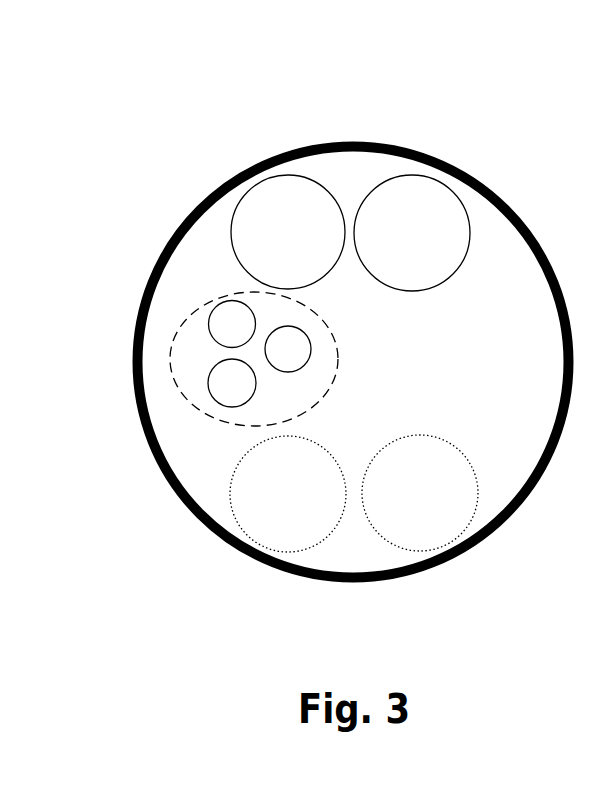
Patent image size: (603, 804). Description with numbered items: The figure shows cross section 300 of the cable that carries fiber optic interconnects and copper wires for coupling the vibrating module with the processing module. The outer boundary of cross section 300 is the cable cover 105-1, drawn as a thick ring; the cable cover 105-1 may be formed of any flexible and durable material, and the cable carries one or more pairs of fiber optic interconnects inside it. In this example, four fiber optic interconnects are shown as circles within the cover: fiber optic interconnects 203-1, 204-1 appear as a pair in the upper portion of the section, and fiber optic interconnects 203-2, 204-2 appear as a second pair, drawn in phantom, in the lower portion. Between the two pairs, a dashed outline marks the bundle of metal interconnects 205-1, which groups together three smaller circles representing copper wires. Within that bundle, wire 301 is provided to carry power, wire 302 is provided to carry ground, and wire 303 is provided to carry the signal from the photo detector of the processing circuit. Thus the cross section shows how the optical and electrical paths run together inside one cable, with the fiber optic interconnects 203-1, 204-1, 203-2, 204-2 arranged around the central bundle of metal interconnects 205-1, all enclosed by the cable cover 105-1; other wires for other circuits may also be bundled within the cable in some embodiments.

The cross section 300 is at (98, 60).
The cable cover 105-1 is at (317, 141).
The fiber optic interconnect 203-1 is at (312, 243).
The fiber optic interconnect 204-1 is at (438, 243).
The fiber optic interconnect 203-2 is at (315, 504).
The fiber optic interconnect 204-2 is at (440, 504).
The bundle of metal interconnects 205-1 is at (313, 309).
The wire 301 is at (208, 322).
The wire 302 is at (208, 385).
The wire 303 is at (305, 367).